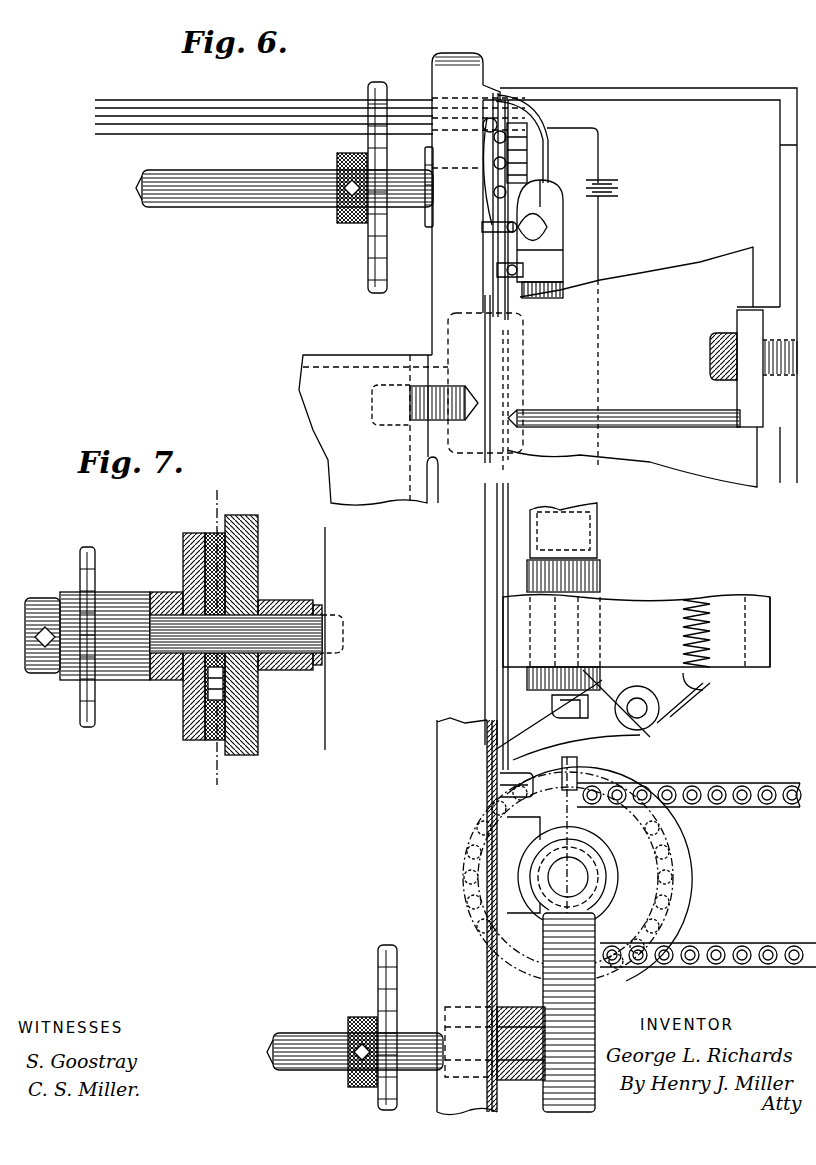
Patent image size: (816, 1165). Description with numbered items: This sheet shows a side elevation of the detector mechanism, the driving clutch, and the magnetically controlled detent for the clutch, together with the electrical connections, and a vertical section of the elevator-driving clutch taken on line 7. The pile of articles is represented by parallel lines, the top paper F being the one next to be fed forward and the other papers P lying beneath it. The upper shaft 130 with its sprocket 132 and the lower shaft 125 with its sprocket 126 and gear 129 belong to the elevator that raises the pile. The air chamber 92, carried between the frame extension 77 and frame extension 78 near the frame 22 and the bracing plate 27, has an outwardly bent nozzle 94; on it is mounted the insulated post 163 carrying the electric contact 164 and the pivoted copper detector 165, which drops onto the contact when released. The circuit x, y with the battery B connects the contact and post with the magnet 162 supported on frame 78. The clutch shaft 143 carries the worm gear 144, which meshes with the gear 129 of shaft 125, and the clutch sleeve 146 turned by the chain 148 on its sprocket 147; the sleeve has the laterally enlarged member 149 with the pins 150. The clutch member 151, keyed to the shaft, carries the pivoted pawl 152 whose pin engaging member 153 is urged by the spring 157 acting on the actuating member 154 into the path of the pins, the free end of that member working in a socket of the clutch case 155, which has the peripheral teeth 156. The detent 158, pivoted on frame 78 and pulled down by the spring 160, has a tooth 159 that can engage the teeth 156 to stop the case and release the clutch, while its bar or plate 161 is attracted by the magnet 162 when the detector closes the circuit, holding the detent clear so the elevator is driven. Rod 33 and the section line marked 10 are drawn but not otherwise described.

In FIG. 6, the top paper F is at (311, 104).
In FIG. 6, the other papers P is at (312, 118).
In FIG. 6, the upper shaft 130 is at (298, 190).
In FIG. 6, the sprocket 132 is at (372, 240).
In FIG. 6, the copper detector 165 is at (487, 85).
In FIG. 6, the outwardly bent nozzle 94 is at (532, 120).
In FIG. 6, the electric contact 164 is at (485, 122).
In FIG. 6, the post 163 is at (512, 155).
In FIG. 6, the battery B is at (616, 188).
In FIG. 6, the air chamber 92 is at (564, 254).
In FIG. 6, the rod 33 is at (493, 251).
In FIG. 6, the electric circuit x is at (510, 372).
In FIG. 6, the electric circuit y is at (602, 373).
In FIG. 6, the clutch shaft 143 is at (624, 658).
In FIG. 7, the clutch shaft 143 is at (330, 636).
In FIG. 6, the frame 22 is at (795, 475).
In FIG. 6, the frame extension 77 is at (697, 447).
In FIG. 6, the plate 27 is at (563, 530).
In FIG. 6, the magnet 162 is at (582, 617).
In FIG. 6, the spring 160 is at (683, 633).
In FIG. 6, the frame extension 78 is at (771, 633).
In FIG. 6, the detent 158 is at (665, 733).
In FIG. 6, the tooth 159 is at (503, 763).
In FIG. 6, the bar or plate 161 is at (567, 708).
In FIG. 6, the section line 7 is at (571, 926).
In FIG. 6, the spring 157 is at (522, 800).
In FIG. 6, the actuating member 154 is at (580, 765).
In FIG. 7, the actuating member 154 is at (258, 527).
In FIG. 6, the pins or bearings 150 is at (660, 877).
In FIG. 7, the pins or bearings 150 is at (213, 553).
In FIG. 6, the sprocket 147 is at (613, 842).
In FIG. 7, the sprocket 147 is at (78, 556).
In FIG. 6, the pin engaging member 153 is at (617, 850).
In FIG. 6, the worm gear 144 is at (612, 895).
In FIG. 6, the peripherally disposed teeth 156 is at (630, 981).
In FIG. 7, the peripherally disposed teeth 156 is at (247, 753).
In FIG. 6, the clutch case 155 is at (610, 988).
In FIG. 7, the clutch case 155 is at (258, 730).
In FIG. 6, the chain 148 is at (770, 790).
In FIG. 6, the gear 129 is at (572, 1112).
In FIG. 6, the lower shaft 125 is at (320, 1033).
In FIG. 6, the sprocket 126 is at (371, 1027).
In FIG. 7, the section line 10 is at (218, 636).
In FIG. 7, the clutch sleeve 146 is at (110, 592).
In FIG. 7, the laterally enlarged member 149 is at (184, 538).
In FIG. 7, the pivoted pawl 152 is at (258, 547).
In FIG. 7, the clutch member 151 is at (253, 592).